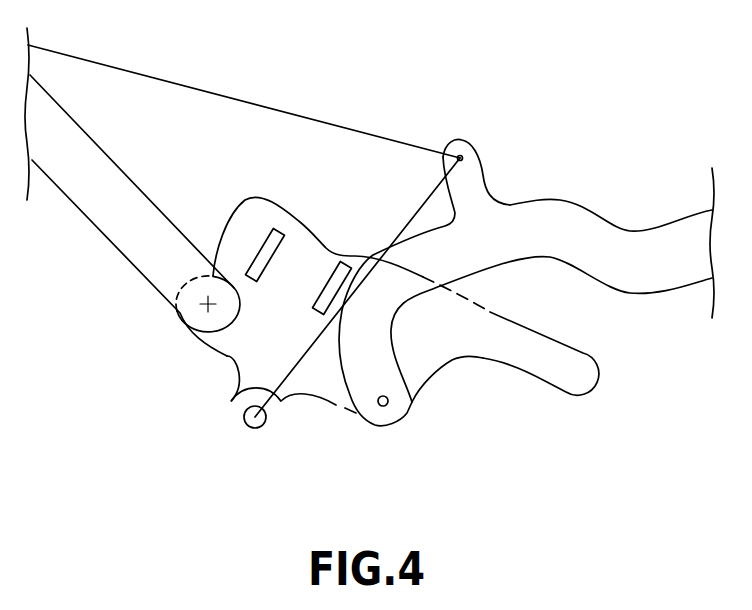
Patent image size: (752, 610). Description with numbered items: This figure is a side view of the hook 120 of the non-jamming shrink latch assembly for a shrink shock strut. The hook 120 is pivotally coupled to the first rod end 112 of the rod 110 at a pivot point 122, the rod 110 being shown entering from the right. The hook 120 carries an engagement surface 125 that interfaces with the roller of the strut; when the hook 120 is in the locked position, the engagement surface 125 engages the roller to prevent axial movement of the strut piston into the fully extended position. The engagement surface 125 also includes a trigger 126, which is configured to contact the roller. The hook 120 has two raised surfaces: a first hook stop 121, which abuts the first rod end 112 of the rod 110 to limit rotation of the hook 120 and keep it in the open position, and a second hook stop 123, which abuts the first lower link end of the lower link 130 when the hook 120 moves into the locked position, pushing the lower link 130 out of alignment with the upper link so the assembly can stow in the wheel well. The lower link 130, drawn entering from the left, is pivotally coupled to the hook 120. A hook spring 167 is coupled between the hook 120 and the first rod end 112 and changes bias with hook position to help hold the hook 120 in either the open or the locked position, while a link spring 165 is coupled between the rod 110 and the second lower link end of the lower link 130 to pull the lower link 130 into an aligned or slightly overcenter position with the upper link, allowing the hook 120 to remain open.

The rod 110 is at (648, 232).
The first rod end 112 is at (546, 206).
The hook 120 is at (238, 355).
The first hook stop 121 is at (347, 256).
The pivot point 122 is at (386, 406).
The second hook stop 123 is at (279, 230).
The engagement surface 125 is at (453, 358).
The trigger 126 is at (545, 381).
The lower link 130 is at (106, 236).
The link spring 165 is at (203, 90).
The hook spring 167 is at (285, 404).